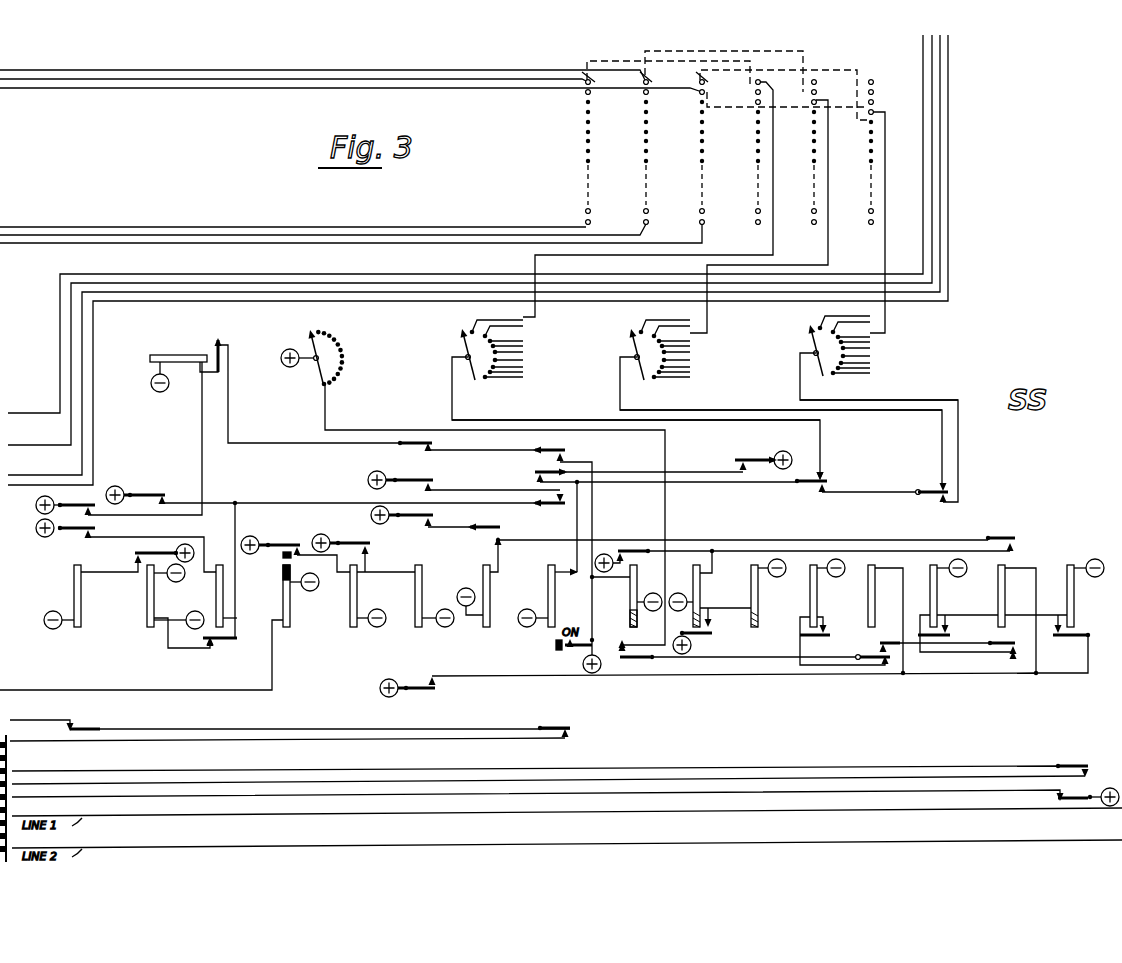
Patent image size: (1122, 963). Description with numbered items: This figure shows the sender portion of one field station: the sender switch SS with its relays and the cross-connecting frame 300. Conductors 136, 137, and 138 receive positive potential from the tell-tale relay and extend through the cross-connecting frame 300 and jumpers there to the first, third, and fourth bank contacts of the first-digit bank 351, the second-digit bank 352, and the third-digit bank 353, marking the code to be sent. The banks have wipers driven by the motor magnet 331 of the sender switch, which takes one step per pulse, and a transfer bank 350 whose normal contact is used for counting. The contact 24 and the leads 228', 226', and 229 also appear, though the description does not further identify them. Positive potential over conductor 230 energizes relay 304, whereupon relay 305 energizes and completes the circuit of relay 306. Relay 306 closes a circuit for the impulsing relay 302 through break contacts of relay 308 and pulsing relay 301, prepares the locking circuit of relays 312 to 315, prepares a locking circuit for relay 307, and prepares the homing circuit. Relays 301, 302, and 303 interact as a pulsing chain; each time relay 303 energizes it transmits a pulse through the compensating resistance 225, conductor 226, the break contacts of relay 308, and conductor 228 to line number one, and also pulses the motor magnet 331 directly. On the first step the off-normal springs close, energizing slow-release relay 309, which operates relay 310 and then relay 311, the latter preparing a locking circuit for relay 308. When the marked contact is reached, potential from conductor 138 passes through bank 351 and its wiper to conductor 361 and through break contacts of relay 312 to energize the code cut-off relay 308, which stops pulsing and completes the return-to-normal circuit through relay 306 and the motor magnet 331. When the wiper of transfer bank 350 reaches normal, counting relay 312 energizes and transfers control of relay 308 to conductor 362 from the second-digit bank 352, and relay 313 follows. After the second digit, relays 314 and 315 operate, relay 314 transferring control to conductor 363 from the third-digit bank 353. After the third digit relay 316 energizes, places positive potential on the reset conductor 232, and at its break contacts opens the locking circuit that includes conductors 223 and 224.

The conductor 136 is at (118, 72).
The conductor 137 is at (171, 78).
The conductor 138 is at (221, 86).
The cross-connecting frame 300 is at (457, 181).
The contact 24 is at (306, 223).
The lead 228' is at (501, 224).
The compensating resistance 225 is at (948, 66).
The lead 226' is at (501, 255).
The lead 229 is at (948, 100).
The conductor 228 is at (290, 565).
The conductor 226 is at (287, 600).
The motor magnet 331 is at (182, 354).
The transfer bank 350 is at (473, 488).
The first-digit bank 351 is at (638, 400).
The second-digit bank 352 is at (781, 402).
The third-digit bank 353 is at (879, 409).
The conductor 361 is at (535, 421).
The conductor 362 is at (725, 410).
The conductor 363 is at (903, 400).
The pulsing relay 301 is at (224, 600).
The impulsing relay 302 is at (154, 600).
The relay 303 is at (82, 600).
The relay 304 is at (291, 600).
The relay 305 is at (358, 600).
The relay 306 is at (422, 600).
The relay 307 is at (490, 600).
The code cut-off relay 308 is at (555, 600).
The slow-release relay 309 is at (630, 600).
The relay 310 is at (700, 600).
The relay 311 is at (757, 600).
The counting relay 312 is at (817, 600).
The relay 313 is at (875, 600).
The relay 314 is at (938, 600).
The relay 315 is at (1005, 600).
The relay 316 is at (1074, 600).
The conductor 230 is at (20, 691).
The conductor 224 is at (20, 775).
The conductor 223 is at (64, 784).
The reset conductor 232 is at (20, 800).